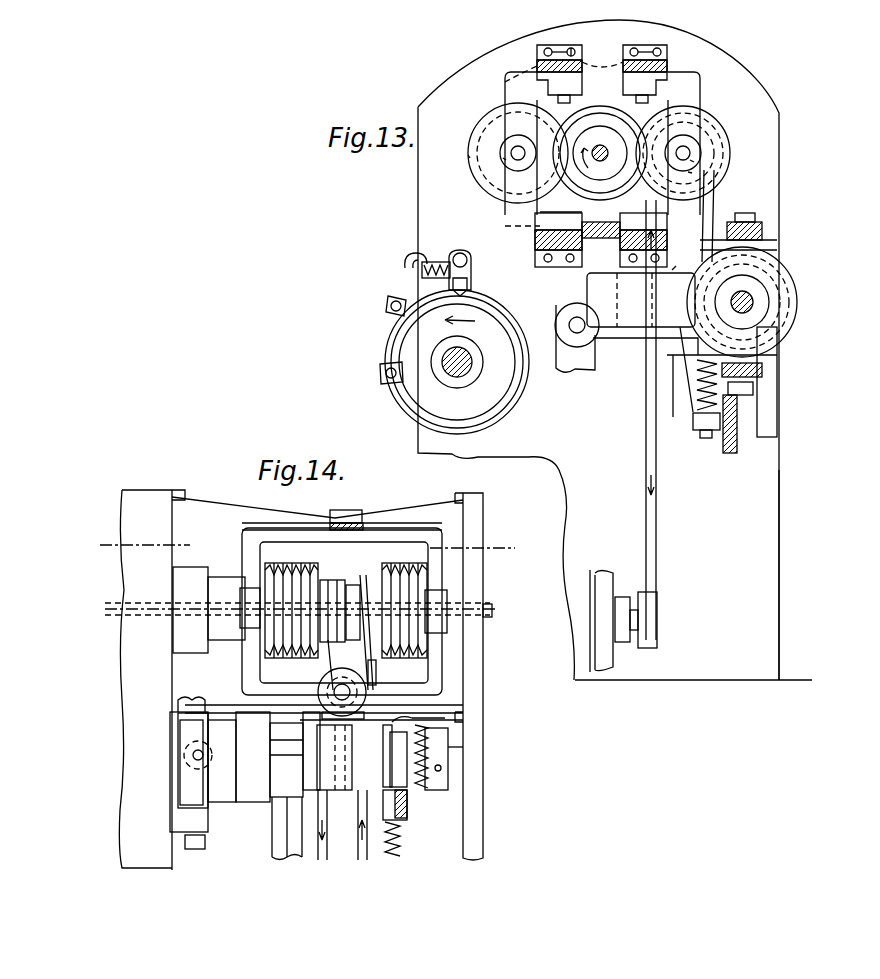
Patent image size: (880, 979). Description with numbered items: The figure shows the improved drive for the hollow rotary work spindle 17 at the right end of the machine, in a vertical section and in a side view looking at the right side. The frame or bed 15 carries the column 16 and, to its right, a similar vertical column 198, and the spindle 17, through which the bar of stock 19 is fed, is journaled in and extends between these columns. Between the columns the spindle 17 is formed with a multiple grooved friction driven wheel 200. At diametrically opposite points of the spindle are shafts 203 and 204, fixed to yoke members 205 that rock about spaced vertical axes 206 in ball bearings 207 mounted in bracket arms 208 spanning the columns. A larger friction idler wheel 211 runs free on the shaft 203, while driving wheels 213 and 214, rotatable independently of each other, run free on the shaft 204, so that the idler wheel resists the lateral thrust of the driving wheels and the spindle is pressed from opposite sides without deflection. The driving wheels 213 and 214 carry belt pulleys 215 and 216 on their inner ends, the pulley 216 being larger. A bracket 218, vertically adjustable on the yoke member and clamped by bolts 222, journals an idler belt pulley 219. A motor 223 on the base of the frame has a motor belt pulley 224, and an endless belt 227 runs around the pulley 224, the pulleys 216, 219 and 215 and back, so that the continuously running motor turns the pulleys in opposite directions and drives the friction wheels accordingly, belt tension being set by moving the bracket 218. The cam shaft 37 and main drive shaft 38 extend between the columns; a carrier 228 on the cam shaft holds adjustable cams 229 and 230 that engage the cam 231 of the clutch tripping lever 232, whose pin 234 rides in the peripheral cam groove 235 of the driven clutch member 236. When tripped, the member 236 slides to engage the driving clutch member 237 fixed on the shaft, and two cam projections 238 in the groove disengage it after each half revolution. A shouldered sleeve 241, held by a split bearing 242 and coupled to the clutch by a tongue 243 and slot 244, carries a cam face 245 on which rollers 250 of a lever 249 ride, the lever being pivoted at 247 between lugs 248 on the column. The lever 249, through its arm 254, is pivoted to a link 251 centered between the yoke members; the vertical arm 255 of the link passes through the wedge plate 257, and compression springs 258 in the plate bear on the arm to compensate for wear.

In FIG. 13, the frame or bed 15 is at (766, 524).
In FIG. 14, the frame or bed 15 is at (115, 532).
In FIG. 14, the column 16 is at (148, 492).
In FIG. 13, the hollow rotary work spindle 17 is at (505, 142).
In FIG. 14, the hollow rotary work spindle 17 is at (225, 578).
In FIG. 13, the bar of stock 19 is at (603, 142).
In FIG. 14, the bar of stock 19 is at (125, 605).
In FIG. 13, the cam shaft 37 is at (457, 377).
In FIG. 13, the main drive shaft 38 is at (748, 300).
In FIG. 14, the main drive shaft 38 is at (497, 748).
In FIG. 13, the vertical column 198 is at (441, 97).
In FIG. 14, the vertical column 198 is at (486, 848).
In FIG. 13, the multiple grooved friction driven wheel 200 is at (540, 212).
In FIG. 13, the shaft 203 is at (503, 158).
In FIG. 13, the shaft 204 is at (690, 172).
In FIG. 13, the yoke member 205 is at (513, 87).
In FIG. 14, the yoke member 205 is at (318, 524).
In FIG. 13, the vertical axis 206 is at (580, 60).
In FIG. 14, the vertical axis 206 is at (355, 516).
In FIG. 13, the ball bearing 207 is at (520, 68).
In FIG. 13, the bracket arm 208 is at (585, 50).
In FIG. 14, the bracket arm 208 is at (432, 518).
In FIG. 13, the multiple grooved friction idler wheel 211 is at (468, 155).
In FIG. 13, the driving wheel 213 is at (692, 160).
In FIG. 14, the driving wheel 213 is at (288, 563).
In FIG. 14, the driving wheel 214 is at (405, 563).
In FIG. 13, the belt pulley 215 is at (720, 150).
In FIG. 14, the belt pulley 215 is at (335, 595).
In FIG. 14, the belt pulley 216 is at (358, 585).
In FIG. 13, the bracket 218 is at (722, 216).
In FIG. 14, the bracket 218 is at (366, 675).
In FIG. 13, the idler belt pulley 219 is at (675, 300).
In FIG. 14, the idler belt pulley 219 is at (330, 690).
In FIG. 13, the bolt 222 is at (674, 268).
In FIG. 13, the motor 223 is at (608, 660).
In FIG. 13, the motor belt pulley 224 is at (658, 640).
In FIG. 13, the endless belt 227 is at (720, 210).
In FIG. 14, the endless belt 227 is at (325, 645).
In FIG. 13, the carrier 228 is at (512, 408).
In FIG. 13, the cam 229 is at (382, 375).
In FIG. 13, the cam 230 is at (388, 308).
In FIG. 13, the cam 231 is at (452, 284).
In FIG. 13, the clutch tripping lever 232 is at (556, 312).
In FIG. 14, the clutch tripping lever 232 is at (395, 858).
In FIG. 14, the pin 234 is at (412, 795).
In FIG. 14, the peripheral cam groove 235 is at (455, 755).
In FIG. 14, the driven clutch member 236 is at (393, 822).
In FIG. 14, the driving clutch member 237 is at (448, 782).
In FIG. 14, the cam projection 238 is at (452, 750).
In FIG. 14, the shouldered sleeve 241 is at (330, 785).
In FIG. 14, the split bearing 242 is at (290, 800).
In FIG. 14, the tongue 243 is at (405, 783).
In FIG. 14, the slot 244 is at (295, 760).
In FIG. 14, the cam face 245 is at (212, 800).
In FIG. 13, the pivot 247 is at (763, 230).
In FIG. 14, the pivot 247 is at (190, 700).
In FIG. 13, the lug 248 is at (778, 245).
In FIG. 14, the lug 248 is at (180, 713).
In FIG. 13, the lever 249 is at (760, 360).
In FIG. 14, the lever 249 is at (190, 738).
In FIG. 13, the roller 250 is at (770, 318).
In FIG. 14, the roller 250 is at (195, 760).
In FIG. 13, the link 251 is at (556, 345).
In FIG. 13, the arm 254 is at (617, 345).
In FIG. 13, the vertical arm 255 is at (545, 230).
In FIG. 13, the wedge plate 257 is at (545, 257).
In FIG. 13, the compression spring 258 is at (600, 220).